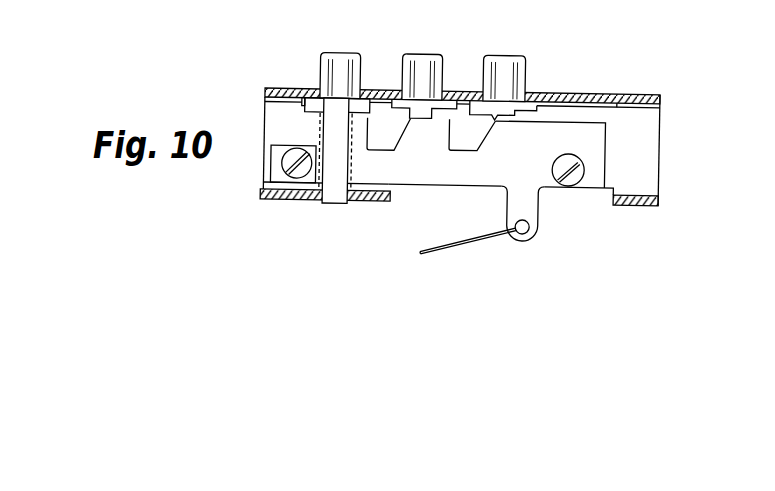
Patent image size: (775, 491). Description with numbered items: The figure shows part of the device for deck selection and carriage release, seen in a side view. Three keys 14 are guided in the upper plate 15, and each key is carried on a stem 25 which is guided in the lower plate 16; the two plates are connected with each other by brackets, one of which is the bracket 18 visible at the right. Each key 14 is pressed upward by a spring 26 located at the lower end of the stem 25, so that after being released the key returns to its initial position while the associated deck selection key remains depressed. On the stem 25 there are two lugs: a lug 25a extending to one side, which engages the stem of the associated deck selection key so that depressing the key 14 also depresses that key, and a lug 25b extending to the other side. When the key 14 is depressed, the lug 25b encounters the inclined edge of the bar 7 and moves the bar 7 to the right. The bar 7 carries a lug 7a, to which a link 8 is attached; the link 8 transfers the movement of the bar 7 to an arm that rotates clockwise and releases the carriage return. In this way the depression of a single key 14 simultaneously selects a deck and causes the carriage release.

The bar 7 is at (464, 172).
The lug 7a is at (530, 202).
The link 8 is at (492, 231).
The key 14 is at (505, 63).
The plate 15 is at (622, 94).
The plate 16 is at (660, 196).
The bracket 18 is at (644, 135).
The stem 25 is at (338, 135).
The lug 25a is at (365, 108).
The lug 25b is at (298, 92).
The spring 26 is at (319, 187).